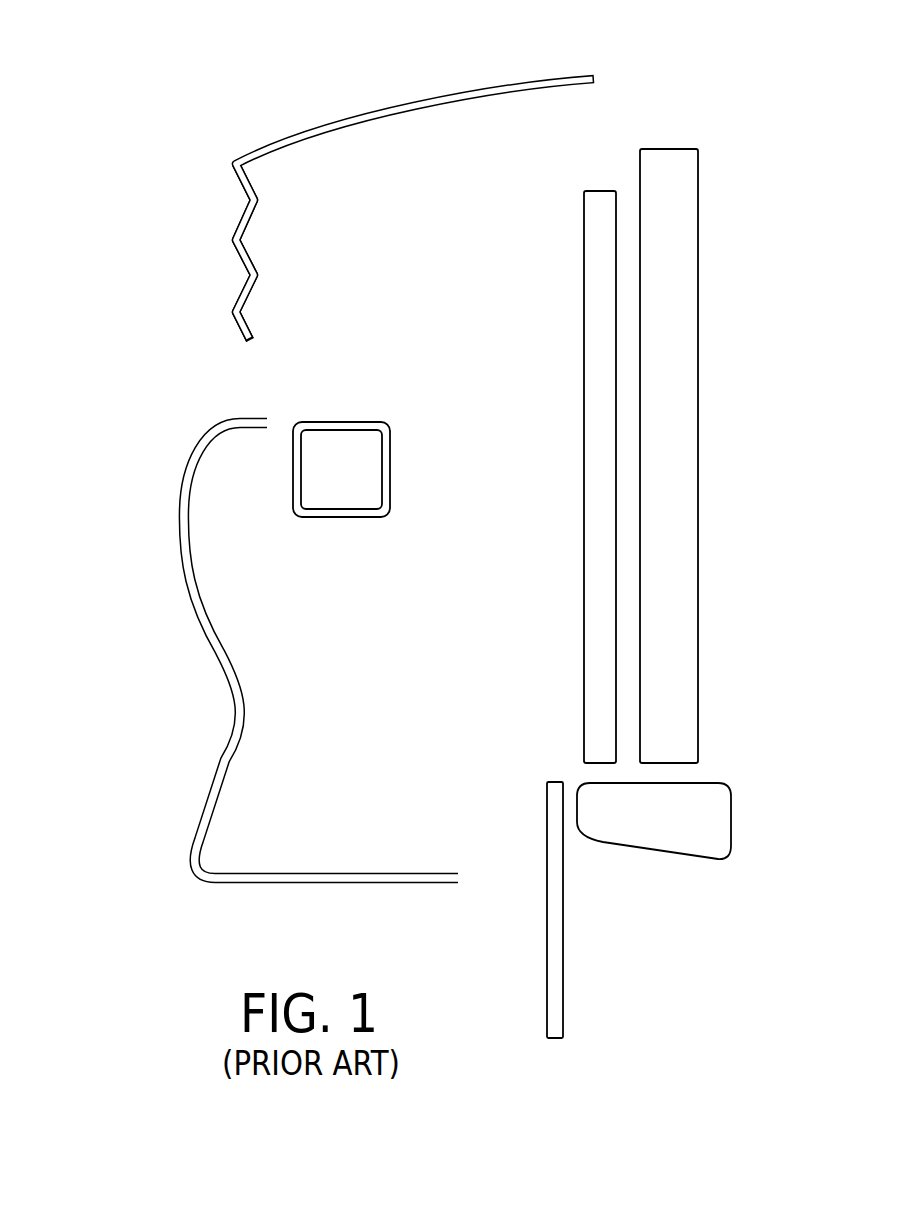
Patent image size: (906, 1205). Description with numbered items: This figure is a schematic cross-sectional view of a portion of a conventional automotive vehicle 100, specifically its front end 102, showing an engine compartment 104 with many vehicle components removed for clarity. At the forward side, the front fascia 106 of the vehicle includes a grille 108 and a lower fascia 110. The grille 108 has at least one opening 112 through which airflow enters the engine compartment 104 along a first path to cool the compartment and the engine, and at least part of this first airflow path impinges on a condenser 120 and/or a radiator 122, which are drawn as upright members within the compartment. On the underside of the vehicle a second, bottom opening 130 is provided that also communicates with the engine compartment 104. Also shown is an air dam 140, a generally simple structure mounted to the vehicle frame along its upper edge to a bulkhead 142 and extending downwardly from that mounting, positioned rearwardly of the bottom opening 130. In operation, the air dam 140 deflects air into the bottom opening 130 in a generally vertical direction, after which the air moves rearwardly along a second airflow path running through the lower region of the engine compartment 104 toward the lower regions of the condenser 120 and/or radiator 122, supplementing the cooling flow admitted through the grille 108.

The automotive vehicle 100 is at (258, 96).
The front end 102 is at (464, 86).
The engine compartment 104 is at (439, 214).
The front fascia 106 is at (163, 421).
The grille 108 is at (243, 265).
The lower fascia 110 is at (216, 652).
The opening 112 is at (248, 375).
The condenser 120 is at (598, 374).
The radiator 122 is at (684, 314).
The bottom opening 130 is at (505, 892).
The air dam 140 is at (556, 982).
The bulkhead 142 is at (720, 822).